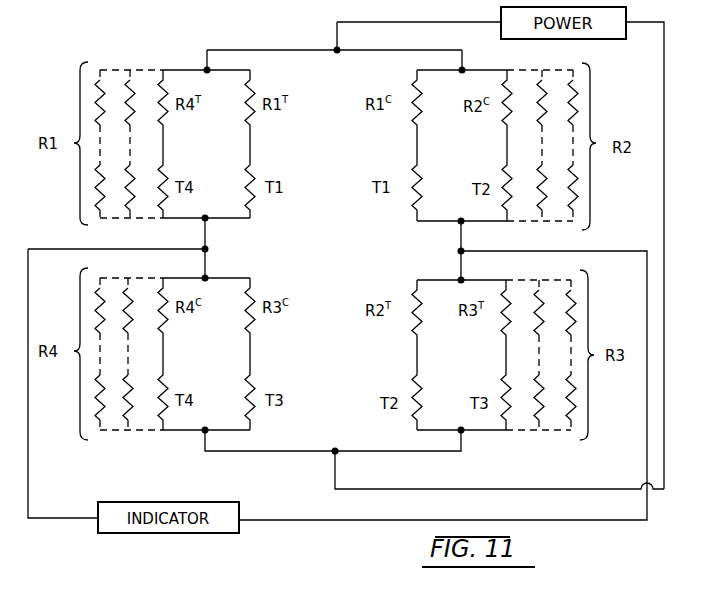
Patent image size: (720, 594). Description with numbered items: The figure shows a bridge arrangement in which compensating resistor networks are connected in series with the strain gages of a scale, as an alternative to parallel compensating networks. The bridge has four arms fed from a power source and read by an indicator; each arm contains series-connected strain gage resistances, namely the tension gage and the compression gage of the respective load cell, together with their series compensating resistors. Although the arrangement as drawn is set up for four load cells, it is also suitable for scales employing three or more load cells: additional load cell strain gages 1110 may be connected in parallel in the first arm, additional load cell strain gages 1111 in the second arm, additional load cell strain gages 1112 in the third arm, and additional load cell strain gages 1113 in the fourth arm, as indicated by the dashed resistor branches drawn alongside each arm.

The additional load cell strain gages 1110 is at (113, 140).
The additional load cell strain gages 1111 is at (552, 135).
The additional load cell strain gages 1112 is at (552, 372).
The additional load cell strain gages 1113 is at (118, 362).